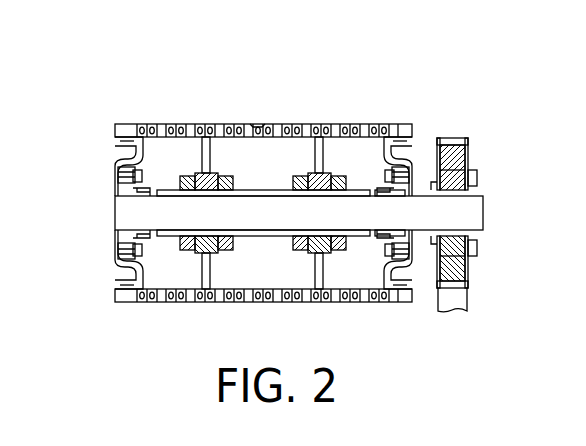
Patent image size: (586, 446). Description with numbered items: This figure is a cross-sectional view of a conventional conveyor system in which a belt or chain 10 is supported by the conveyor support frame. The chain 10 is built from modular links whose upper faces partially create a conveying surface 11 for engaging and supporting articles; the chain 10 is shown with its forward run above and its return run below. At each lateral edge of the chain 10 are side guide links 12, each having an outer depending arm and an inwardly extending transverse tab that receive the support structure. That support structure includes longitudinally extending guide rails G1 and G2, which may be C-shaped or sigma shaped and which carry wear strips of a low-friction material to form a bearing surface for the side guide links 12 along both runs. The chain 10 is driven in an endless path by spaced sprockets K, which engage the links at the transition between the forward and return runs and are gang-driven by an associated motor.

The conveying surface 11 is at (195, 80).
The chain 10 is at (349, 124).
The side guide link 12 is at (114, 142).
The sprocket K is at (288, 126).
The guide rail G1 is at (115, 252).
The guide rail G2 is at (410, 262).